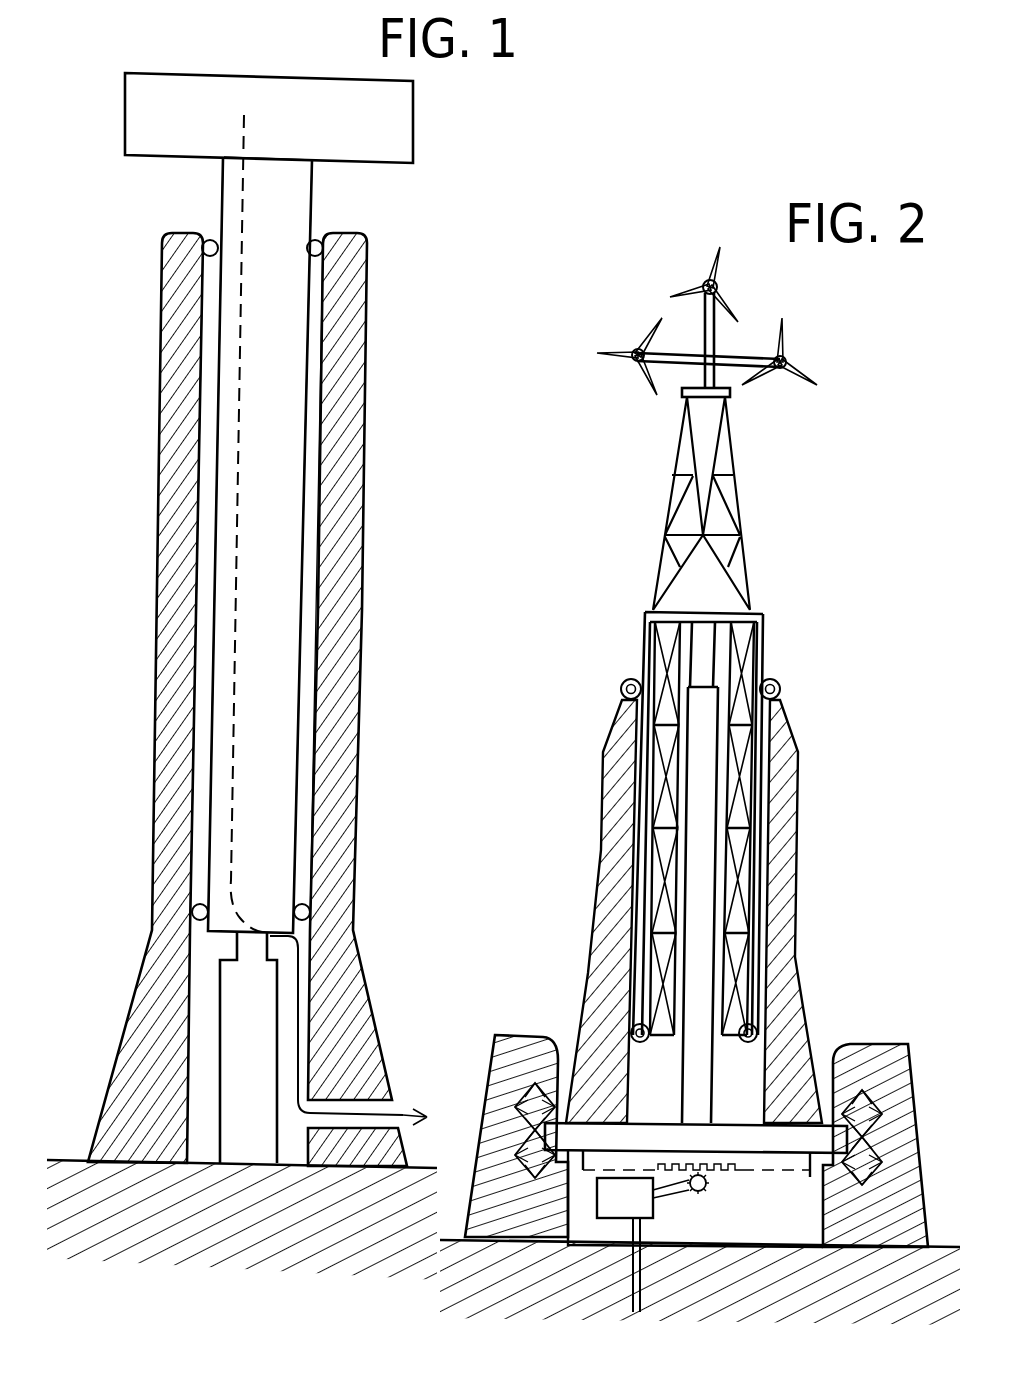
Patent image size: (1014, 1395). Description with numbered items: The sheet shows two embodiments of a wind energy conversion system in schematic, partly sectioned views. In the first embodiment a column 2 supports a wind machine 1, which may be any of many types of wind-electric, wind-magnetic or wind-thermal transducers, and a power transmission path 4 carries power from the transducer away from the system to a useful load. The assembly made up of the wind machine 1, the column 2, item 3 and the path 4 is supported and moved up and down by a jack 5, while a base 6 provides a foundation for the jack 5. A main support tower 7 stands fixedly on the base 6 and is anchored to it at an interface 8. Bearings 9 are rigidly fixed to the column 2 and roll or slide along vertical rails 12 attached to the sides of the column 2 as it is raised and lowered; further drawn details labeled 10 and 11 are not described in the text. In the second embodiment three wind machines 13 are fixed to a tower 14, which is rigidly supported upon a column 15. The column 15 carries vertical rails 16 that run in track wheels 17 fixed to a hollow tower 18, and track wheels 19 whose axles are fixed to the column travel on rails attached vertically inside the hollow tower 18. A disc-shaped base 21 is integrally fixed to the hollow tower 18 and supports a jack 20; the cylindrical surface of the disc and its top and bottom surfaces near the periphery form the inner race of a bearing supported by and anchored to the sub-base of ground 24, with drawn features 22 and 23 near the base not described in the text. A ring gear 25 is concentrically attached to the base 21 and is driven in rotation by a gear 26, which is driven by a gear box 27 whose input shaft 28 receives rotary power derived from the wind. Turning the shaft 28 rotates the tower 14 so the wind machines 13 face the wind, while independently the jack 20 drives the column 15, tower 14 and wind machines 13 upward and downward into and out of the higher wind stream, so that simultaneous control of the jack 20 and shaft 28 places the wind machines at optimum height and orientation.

In FIG. 1, the wind machine 1 is at (186, 73).
In FIG. 1, the column 2 is at (230, 182).
In FIG. 1, the assembly item 3 is at (278, 157).
In FIG. 1, the power transmission path 4 is at (246, 117).
In FIG. 1, the jack 5 is at (248, 1047).
In FIG. 1, the base 6 is at (242, 1220).
In FIG. 1, the main support tower 7 is at (156, 608).
In FIG. 1, the interface 8 is at (108, 1158).
In FIG. 1, the bearings 9 is at (198, 900).
In FIG. 1, the inner bore of housing 10 is at (205, 503).
In FIG. 1, the upper bearing rollers 11 is at (222, 230).
In FIG. 1, the vertical rails 12 is at (218, 370).
In FIG. 2, the wind machines 13 is at (708, 280).
In FIG. 2, the tower 14 is at (735, 455).
In FIG. 2, the column 15 is at (743, 655).
In FIG. 2, the vertical rails 16 is at (647, 638).
In FIG. 2, the track wheels 17 is at (630, 679).
In FIG. 2, the hollow tower 18 is at (694, 911).
In FIG. 2, the track wheels 19 is at (637, 1046).
In FIG. 2, the jack 20 is at (700, 872).
In FIG. 2, the base 21 is at (696, 1138).
In FIG. 2, the shock absorbers 22 is at (530, 1175).
In FIG. 2, the anchor blocks 23 is at (696, 1141).
In FIG. 2, the sub-base of ground 24 is at (700, 1282).
In FIG. 2, the ring gear 25 is at (757, 1182).
In FIG. 2, the gear 26 is at (722, 1207).
In FIG. 2, the gear box 27 is at (625, 1198).
In FIG. 2, the input shaft 28 is at (642, 1312).